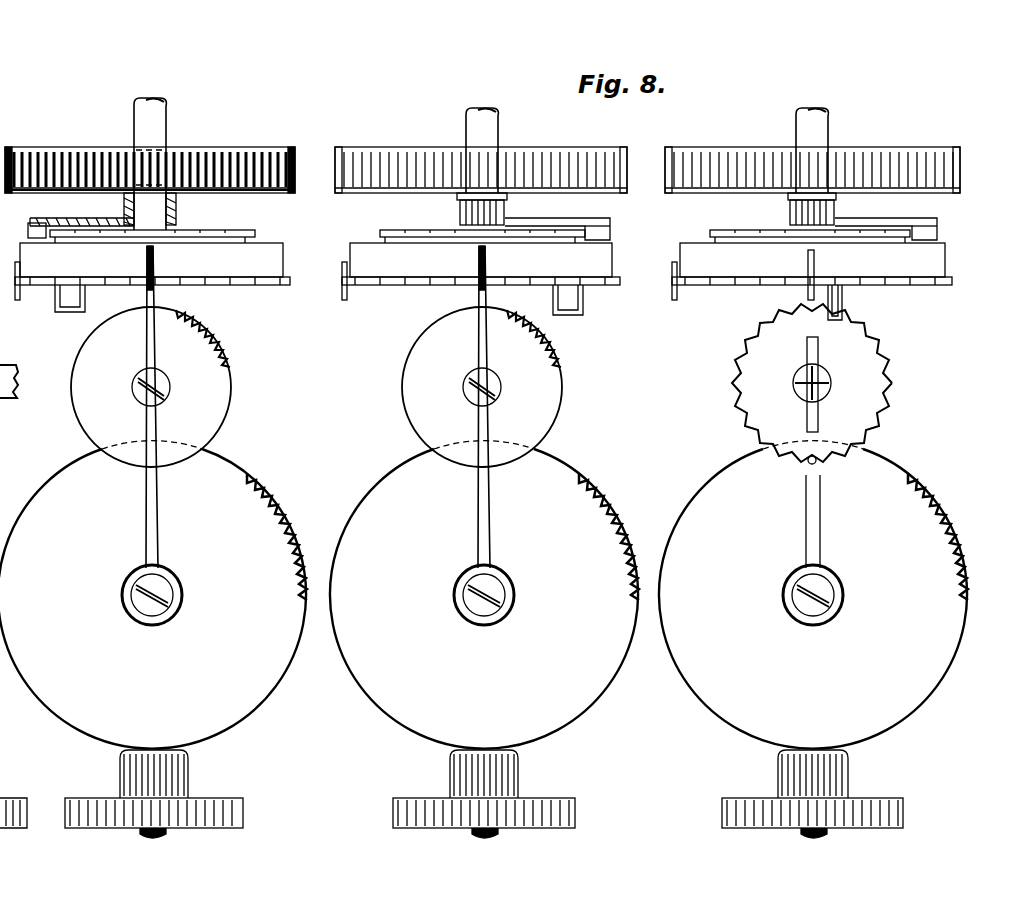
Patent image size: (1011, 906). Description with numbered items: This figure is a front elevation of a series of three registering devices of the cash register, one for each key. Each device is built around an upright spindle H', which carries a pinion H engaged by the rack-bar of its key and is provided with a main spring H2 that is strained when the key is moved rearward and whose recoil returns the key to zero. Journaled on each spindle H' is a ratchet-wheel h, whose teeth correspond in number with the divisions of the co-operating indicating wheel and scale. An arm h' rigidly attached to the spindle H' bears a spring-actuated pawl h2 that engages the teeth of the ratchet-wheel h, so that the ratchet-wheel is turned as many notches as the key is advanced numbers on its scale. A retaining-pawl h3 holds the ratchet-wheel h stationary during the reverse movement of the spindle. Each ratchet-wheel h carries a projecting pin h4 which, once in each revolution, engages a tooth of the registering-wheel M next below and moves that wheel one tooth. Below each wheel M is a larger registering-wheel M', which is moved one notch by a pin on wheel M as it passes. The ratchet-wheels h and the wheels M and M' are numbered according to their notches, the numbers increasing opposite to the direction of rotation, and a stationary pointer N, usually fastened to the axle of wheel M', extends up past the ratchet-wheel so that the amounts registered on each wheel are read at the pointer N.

The upright spindle H' is at (481, 164).
The main spring H2 is at (233, 152).
The arm h' is at (475, 209).
The ratchet-wheel h is at (483, 256).
The spring-actuated pawl h2 is at (27, 232).
The retaining-pawl h3 is at (19, 298).
The projecting pin h4 is at (70, 312).
The registering-wheel M is at (481, 385).
The larger registering-wheel M' is at (484, 595).
The stationary pointer N is at (164, 505).
The pinion H is at (451, 775).